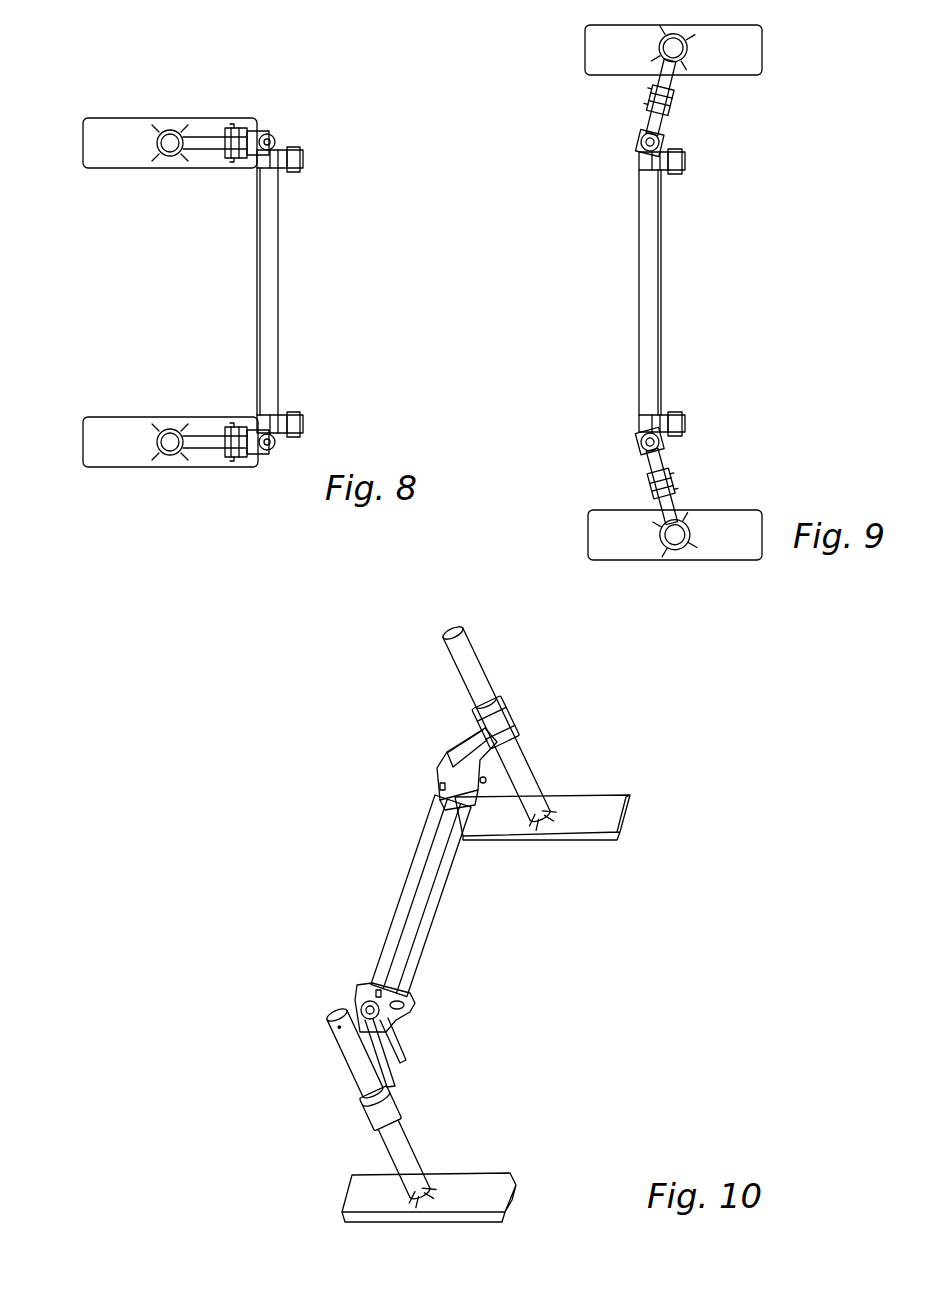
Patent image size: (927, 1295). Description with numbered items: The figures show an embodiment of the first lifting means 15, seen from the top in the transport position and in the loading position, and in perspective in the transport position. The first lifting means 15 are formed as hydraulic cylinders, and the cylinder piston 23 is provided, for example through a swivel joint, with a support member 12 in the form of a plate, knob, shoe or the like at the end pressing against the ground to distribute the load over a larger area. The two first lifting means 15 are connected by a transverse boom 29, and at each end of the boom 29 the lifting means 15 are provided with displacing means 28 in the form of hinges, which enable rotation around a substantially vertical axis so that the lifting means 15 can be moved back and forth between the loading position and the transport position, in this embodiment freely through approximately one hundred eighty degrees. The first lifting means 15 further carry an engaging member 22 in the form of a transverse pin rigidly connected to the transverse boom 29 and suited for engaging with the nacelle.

In FIG. 8, the support member 12 is at (117, 150).
In FIG. 9, the support member 12 is at (730, 57).
In FIG. 10, the support member 12 is at (615, 810).
In FIG. 8, the first lifting means 15 is at (271, 100).
In FIG. 9, the first lifting means 15 is at (724, 453).
In FIG. 10, the first lifting means 15 is at (531, 689).
In FIG. 8, the engaging member 22 is at (303, 152).
In FIG. 9, the engaging member 22 is at (687, 420).
In FIG. 10, the engaging member 22 is at (407, 993).
In FIG. 10, the cylinder piston 23 is at (530, 777).
In FIG. 8, the displacing means 28 is at (273, 135).
In FIG. 9, the displacing means 28 is at (648, 141).
In FIG. 10, the displacing means 28 is at (367, 997).
In FIG. 8, the transverse boom 29 is at (271, 306).
In FIG. 9, the transverse boom 29 is at (655, 302).
In FIG. 10, the transverse boom 29 is at (433, 890).